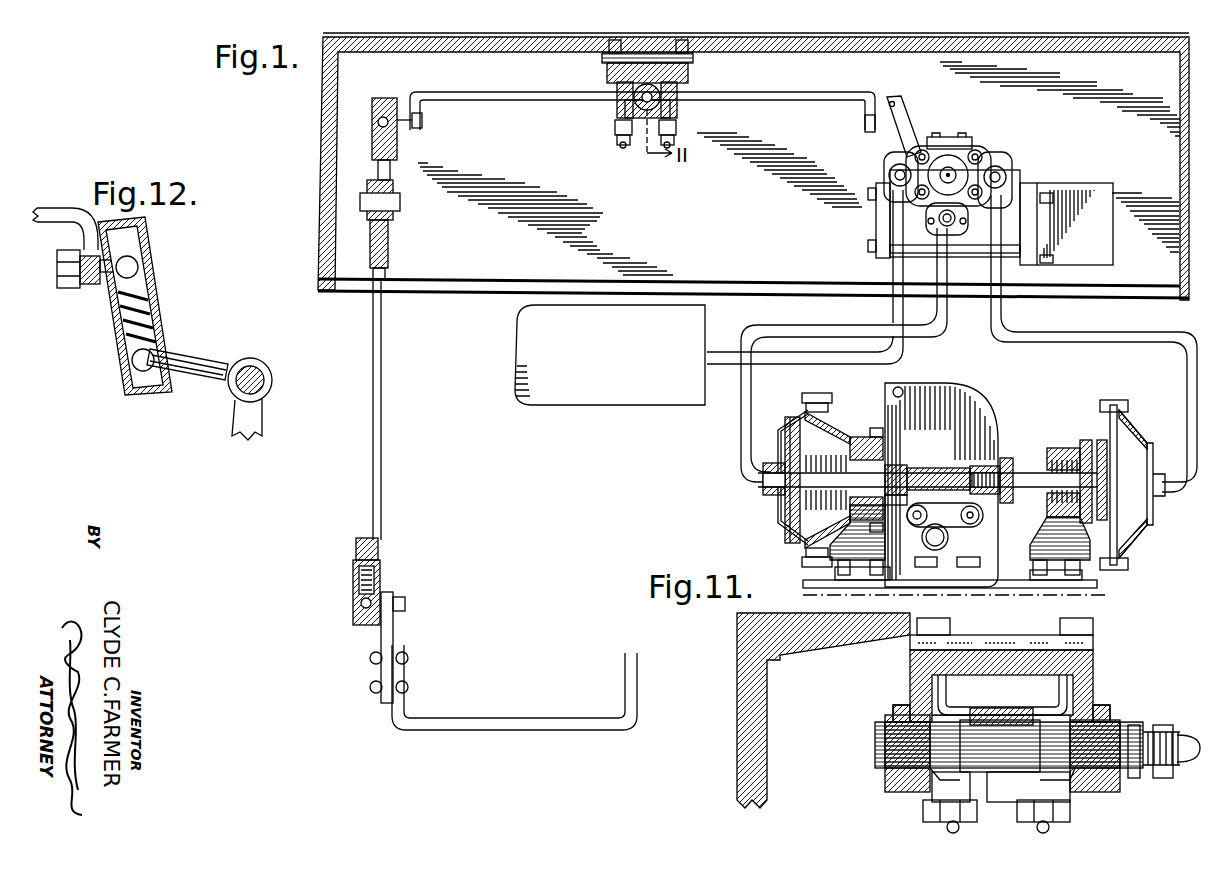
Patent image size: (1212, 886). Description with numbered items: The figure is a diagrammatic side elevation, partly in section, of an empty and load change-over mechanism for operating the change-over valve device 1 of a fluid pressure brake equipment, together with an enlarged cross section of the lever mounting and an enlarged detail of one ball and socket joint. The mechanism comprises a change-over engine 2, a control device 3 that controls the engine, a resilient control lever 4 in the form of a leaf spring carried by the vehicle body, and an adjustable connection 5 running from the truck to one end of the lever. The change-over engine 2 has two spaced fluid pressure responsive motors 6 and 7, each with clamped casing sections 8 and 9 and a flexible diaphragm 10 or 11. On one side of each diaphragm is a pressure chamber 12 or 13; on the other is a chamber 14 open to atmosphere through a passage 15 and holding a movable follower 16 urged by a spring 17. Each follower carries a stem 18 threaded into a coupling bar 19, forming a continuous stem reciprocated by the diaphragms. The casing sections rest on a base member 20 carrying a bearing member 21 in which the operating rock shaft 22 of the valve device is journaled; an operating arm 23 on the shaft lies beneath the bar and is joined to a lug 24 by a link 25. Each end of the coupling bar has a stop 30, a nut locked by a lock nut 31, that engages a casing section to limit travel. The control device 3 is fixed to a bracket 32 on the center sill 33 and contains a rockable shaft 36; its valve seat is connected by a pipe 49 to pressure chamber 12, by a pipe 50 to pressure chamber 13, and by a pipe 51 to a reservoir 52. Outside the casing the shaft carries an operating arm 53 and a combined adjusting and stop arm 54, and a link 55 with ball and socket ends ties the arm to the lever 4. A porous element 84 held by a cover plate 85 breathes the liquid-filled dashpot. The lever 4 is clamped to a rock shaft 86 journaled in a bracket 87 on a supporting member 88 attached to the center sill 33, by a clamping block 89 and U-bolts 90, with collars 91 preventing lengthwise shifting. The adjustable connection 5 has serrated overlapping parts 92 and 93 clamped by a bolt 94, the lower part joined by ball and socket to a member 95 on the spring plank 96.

In FIG. 1, the change-over valve device 1 is at (984, 390).
In FIG. 1, the change-over engine 2 is at (1003, 568).
In FIG. 1, the control device 3 is at (865, 229).
In FIG. 1, the resilient control lever 4 is at (466, 93).
In FIG. 11, the resilient control lever 4 is at (1051, 717).
In FIG. 12, the resilient control lever 4 is at (54, 209).
In FIG. 1, the adjustable connection 5 is at (380, 352).
In FIG. 1, the fluid pressure responsive motor 6 is at (802, 412).
In FIG. 1, the fluid pressure responsive motor 7 is at (1123, 417).
In FIG. 1, the casing section 8 is at (837, 567).
In FIG. 1, the casing section 9 is at (796, 543).
In FIG. 1, the flexible diaphragm 10 is at (787, 530).
In FIG. 1, the flexible diaphragm 11 is at (1103, 440).
In FIG. 1, the pressure chamber 12 is at (785, 505).
In FIG. 1, the pressure chamber 13 is at (1117, 437).
In FIG. 1, the chamber 14 is at (823, 430).
In FIG. 1, the passage 15 is at (868, 446).
In FIG. 1, the movable follower 16 is at (800, 432).
In FIG. 1, the spring 17 is at (831, 561).
In FIG. 1, the stem 18 is at (805, 476).
In FIG. 1, the coupling bar 19 is at (942, 468).
In FIG. 1, the base member 20 is at (1080, 583).
In FIG. 1, the bearing member 21 is at (950, 550).
In FIG. 1, the operating rock shaft 22 is at (928, 545).
In FIG. 1, the operating arm 23 is at (923, 537).
In FIG. 1, the lug 24 is at (984, 517).
In FIG. 1, the link 25 is at (975, 526).
In FIG. 1, the stop 30 is at (890, 463).
In FIG. 1, the lock nut 31 is at (910, 468).
In FIG. 1, the bracket 32 is at (1067, 183).
In FIG. 1, the center sill 33 is at (1160, 288).
In FIG. 11, the center sill 33 is at (737, 717).
In FIG. 12, the shaft 36 is at (254, 372).
In FIG. 1, the pipe 49 is at (940, 268).
In FIG. 1, the pipe 50 is at (992, 262).
In FIG. 1, the pipe 51 is at (893, 265).
In FIG. 1, the reservoir 52 is at (552, 392).
In FIG. 12, the operating arm 53 is at (213, 360).
In FIG. 12, the combined adjusting and stop arm 54 is at (262, 418).
In FIG. 1, the link 55 is at (906, 132).
In FIG. 12, the link 55 is at (160, 307).
In FIG. 1, the porous element 84 is at (975, 143).
In FIG. 1, the cover plate 85 is at (946, 138).
In FIG. 1, the rock shaft 86 is at (614, 122).
In FIG. 11, the rock shaft 86 is at (877, 745).
In FIG. 1, the bracket 87 is at (690, 70).
In FIG. 11, the bracket 87 is at (1023, 662).
In FIG. 1, the supporting member 88 is at (603, 56).
In FIG. 11, the supporting member 88 is at (963, 641).
In FIG. 1, the clamping block 89 is at (622, 108).
In FIG. 11, the clamping block 89 is at (1001, 798).
In FIG. 1, the U-bolt 90 is at (622, 88).
In FIG. 11, the U-bolt 90 is at (935, 823).
In FIG. 11, the collar 91 is at (890, 776).
In FIG. 1, the part of adjustable connection 92 is at (380, 404).
In FIG. 1, the part of adjustable connection 93 is at (395, 172).
In FIG. 1, the bolt 94 is at (396, 208).
In FIG. 1, the member 95 is at (390, 635).
In FIG. 1, the spring plank 96 is at (437, 718).